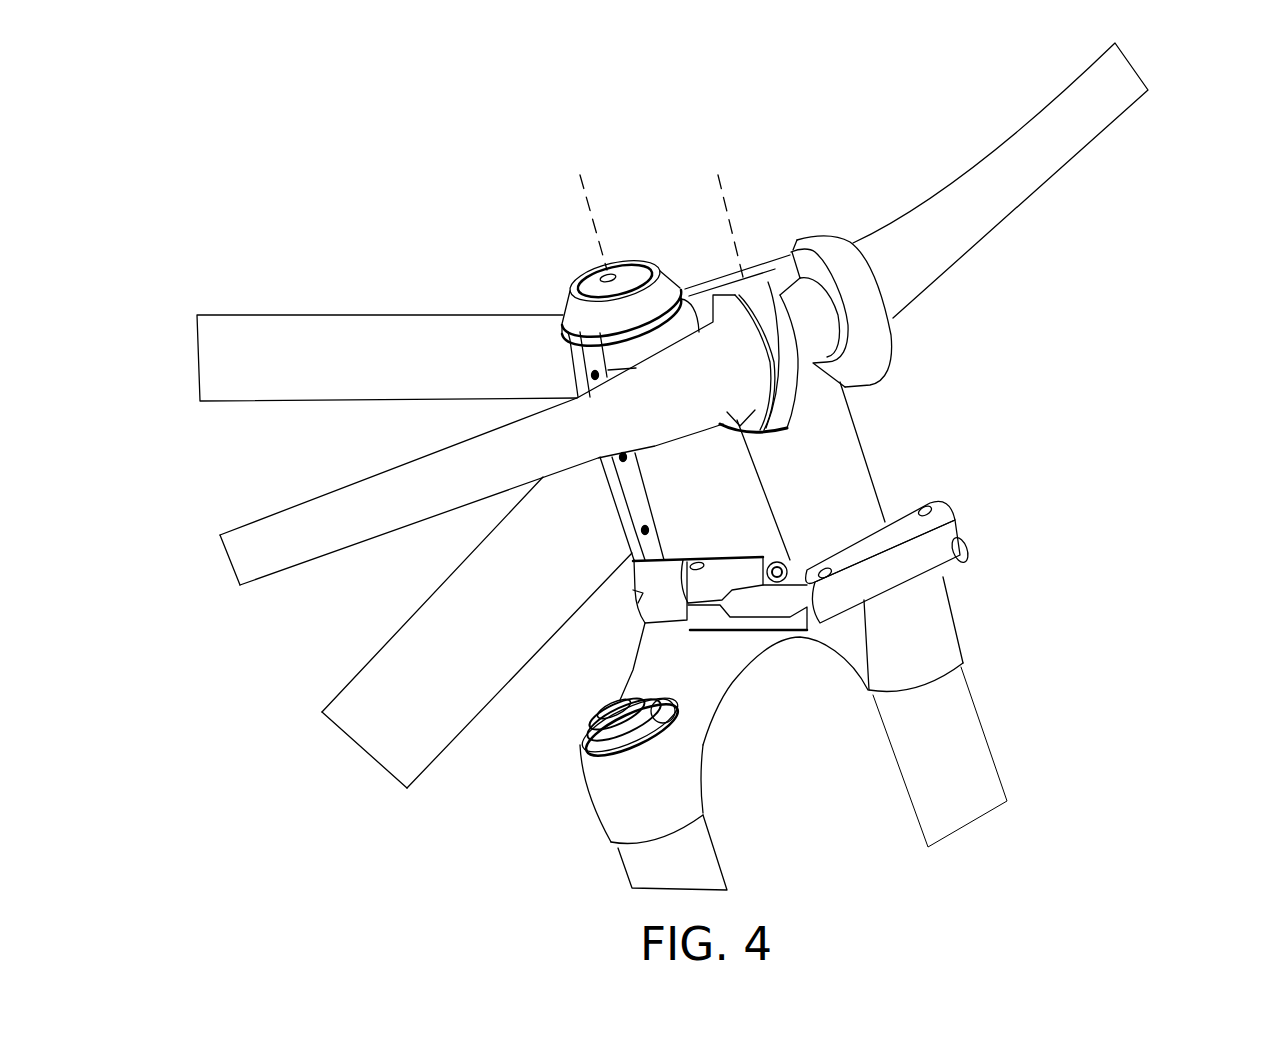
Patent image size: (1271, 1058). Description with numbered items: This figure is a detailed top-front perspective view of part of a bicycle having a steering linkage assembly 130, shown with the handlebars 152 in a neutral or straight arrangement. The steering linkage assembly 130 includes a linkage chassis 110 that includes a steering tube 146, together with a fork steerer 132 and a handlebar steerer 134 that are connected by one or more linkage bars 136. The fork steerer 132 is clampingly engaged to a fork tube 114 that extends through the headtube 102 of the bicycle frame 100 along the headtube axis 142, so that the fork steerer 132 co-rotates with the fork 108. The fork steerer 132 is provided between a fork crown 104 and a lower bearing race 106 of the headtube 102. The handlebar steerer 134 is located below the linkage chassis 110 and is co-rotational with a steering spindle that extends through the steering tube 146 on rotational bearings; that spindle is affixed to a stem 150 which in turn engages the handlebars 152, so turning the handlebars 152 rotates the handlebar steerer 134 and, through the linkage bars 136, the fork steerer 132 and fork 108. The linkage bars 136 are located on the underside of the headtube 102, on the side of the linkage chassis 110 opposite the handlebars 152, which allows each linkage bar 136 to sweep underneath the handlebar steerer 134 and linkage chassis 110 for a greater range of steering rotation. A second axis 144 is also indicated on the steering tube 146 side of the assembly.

The bicycle frame 100 is at (445, 375).
The headtube 102 is at (572, 352).
The fork crown 104 is at (680, 640).
The lower bearing race 106 is at (625, 553).
The fork 108 is at (690, 857).
The linkage chassis 110 is at (695, 507).
The fork tube 114 is at (633, 268).
The steering linkage assembly 130 is at (977, 582).
The fork steerer 132 is at (640, 600).
The handlebar steerer 134 is at (940, 522).
The linkage bars 136 is at (960, 555).
The headtube axis 142 is at (580, 188).
The second axis 144 is at (723, 205).
The steering tube 146 is at (822, 437).
The stem 150 is at (877, 327).
The handlebars 152 is at (983, 195).